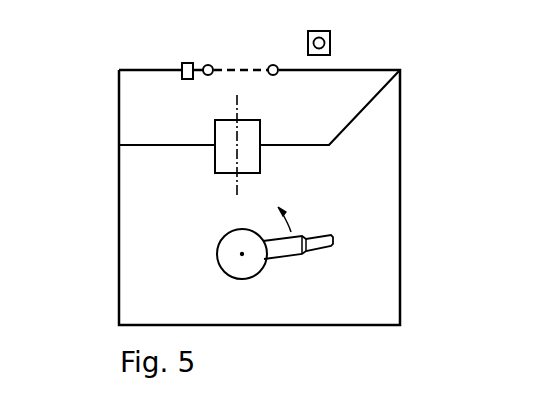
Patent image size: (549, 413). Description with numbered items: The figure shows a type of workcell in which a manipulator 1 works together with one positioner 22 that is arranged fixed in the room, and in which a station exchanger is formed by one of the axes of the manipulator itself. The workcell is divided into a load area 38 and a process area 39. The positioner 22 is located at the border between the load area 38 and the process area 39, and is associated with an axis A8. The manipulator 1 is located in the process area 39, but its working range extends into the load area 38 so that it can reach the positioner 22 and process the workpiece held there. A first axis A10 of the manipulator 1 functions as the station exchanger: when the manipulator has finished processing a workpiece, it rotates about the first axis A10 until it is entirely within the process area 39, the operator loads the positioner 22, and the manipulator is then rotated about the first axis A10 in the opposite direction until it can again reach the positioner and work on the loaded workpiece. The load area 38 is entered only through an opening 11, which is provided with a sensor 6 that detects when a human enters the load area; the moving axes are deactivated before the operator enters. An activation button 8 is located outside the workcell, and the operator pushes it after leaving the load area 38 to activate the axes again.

The manipulator 1 is at (281, 250).
The sensor 6 is at (185, 63).
The activation button 8 is at (330, 34).
The opening 11 is at (247, 70).
The positioner 22 is at (225, 158).
The load area 38 is at (150, 117).
The process area 39 is at (387, 195).
The axis A8 is at (237, 103).
The first axis A10 is at (241, 255).